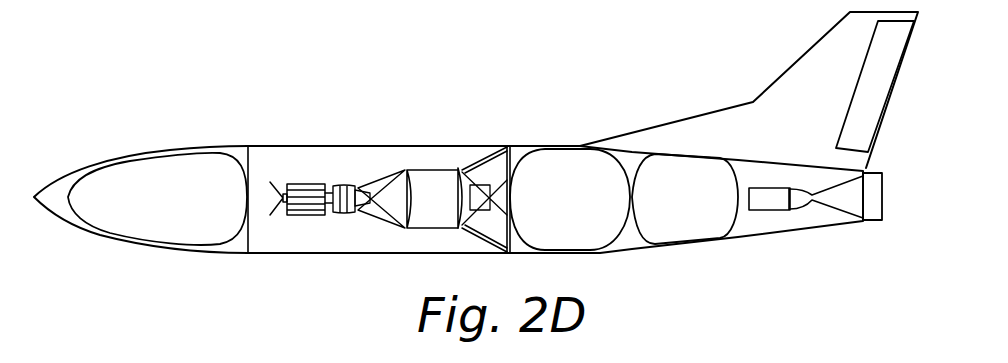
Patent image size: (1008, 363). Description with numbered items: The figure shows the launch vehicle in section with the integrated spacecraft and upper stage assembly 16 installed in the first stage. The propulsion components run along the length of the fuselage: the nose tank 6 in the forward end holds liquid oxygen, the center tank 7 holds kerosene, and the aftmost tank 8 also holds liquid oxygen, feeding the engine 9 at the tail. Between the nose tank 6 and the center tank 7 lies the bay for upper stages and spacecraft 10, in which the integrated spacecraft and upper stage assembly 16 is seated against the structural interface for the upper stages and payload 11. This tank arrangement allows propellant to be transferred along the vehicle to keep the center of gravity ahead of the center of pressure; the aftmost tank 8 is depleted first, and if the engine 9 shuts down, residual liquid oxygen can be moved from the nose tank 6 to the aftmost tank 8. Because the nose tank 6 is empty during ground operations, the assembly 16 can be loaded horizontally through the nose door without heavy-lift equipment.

The nose tank 6 is at (193, 183).
The center tank 7 is at (548, 178).
The aftmost tank 8 is at (672, 177).
The engine 9 is at (767, 200).
The bay for upper stages and spacecraft 10 is at (330, 160).
The structural interface for the upper stages and payload 11 is at (474, 160).
The integrated spacecraft and upper stage assembly 16 is at (377, 220).